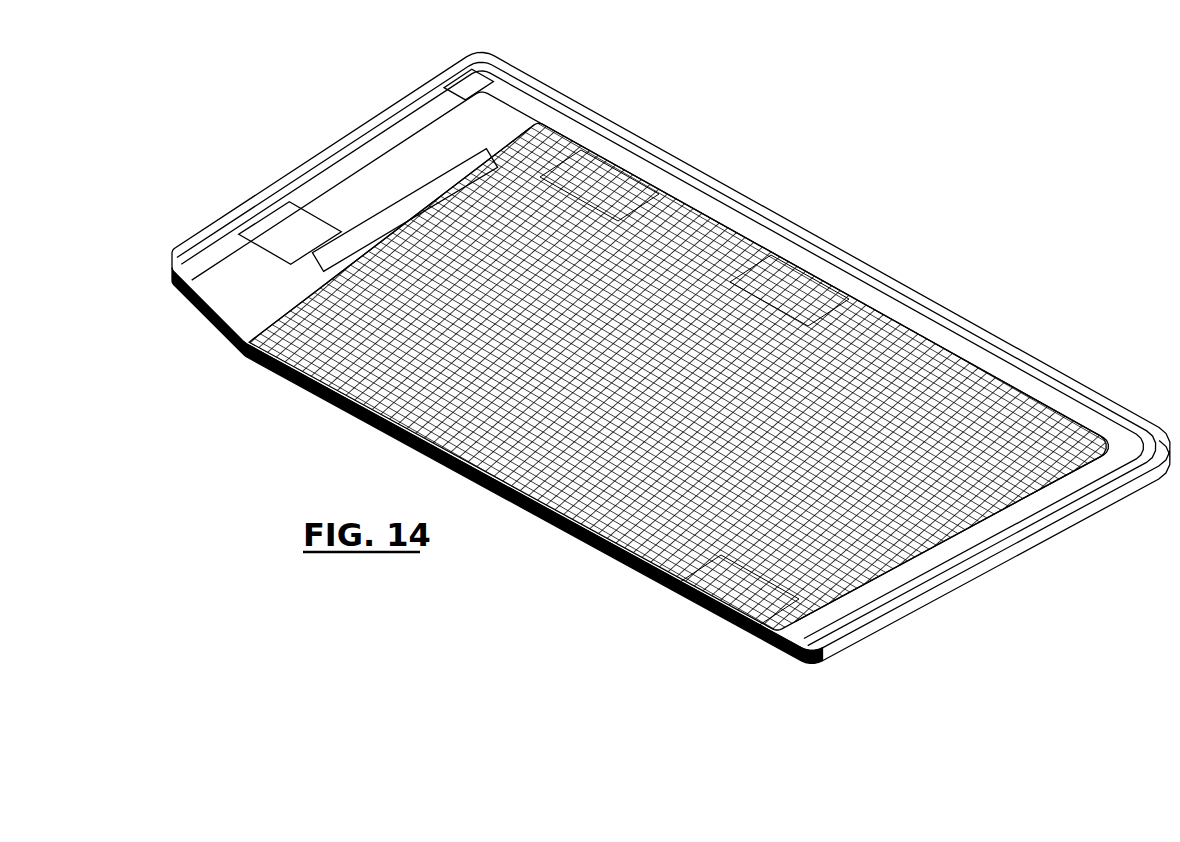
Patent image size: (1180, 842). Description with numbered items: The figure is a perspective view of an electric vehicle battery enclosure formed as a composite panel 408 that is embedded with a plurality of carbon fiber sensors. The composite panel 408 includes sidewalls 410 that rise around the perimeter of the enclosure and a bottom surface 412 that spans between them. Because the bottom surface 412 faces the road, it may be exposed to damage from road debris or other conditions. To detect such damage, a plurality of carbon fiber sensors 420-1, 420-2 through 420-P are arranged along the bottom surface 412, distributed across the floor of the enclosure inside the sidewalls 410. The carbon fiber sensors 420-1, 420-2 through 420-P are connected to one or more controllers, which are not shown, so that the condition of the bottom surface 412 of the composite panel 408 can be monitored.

The composite panel 408 is at (903, 96).
The sidewalls 410 is at (702, 172).
The bottom surface 412 is at (464, 152).
The carbon fiber sensor 420-1 is at (593, 173).
The carbon fiber sensor 420-2 is at (777, 283).
The carbon fiber sensor 420-P is at (723, 600).